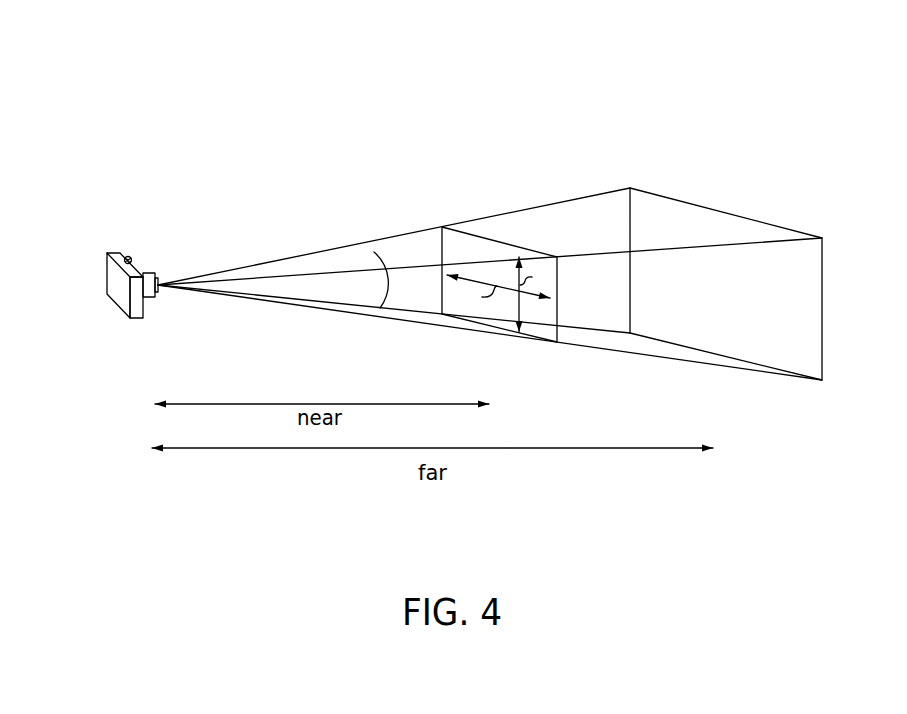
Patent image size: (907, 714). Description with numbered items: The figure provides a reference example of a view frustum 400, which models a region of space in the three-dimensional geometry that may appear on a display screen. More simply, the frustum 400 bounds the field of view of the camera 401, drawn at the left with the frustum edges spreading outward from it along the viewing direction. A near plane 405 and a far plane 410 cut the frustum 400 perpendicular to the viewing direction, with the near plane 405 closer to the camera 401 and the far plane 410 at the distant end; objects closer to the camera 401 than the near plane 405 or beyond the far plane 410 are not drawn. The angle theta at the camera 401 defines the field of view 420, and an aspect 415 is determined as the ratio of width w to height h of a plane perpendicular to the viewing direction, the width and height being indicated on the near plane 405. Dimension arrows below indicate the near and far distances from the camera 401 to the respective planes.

The view frustum 400 is at (637, 73).
The camera 401 is at (110, 253).
The near plane 405 is at (547, 313).
The far plane 410 is at (807, 313).
The aspect 415 is at (526, 242).
The field of view 420 is at (401, 289).